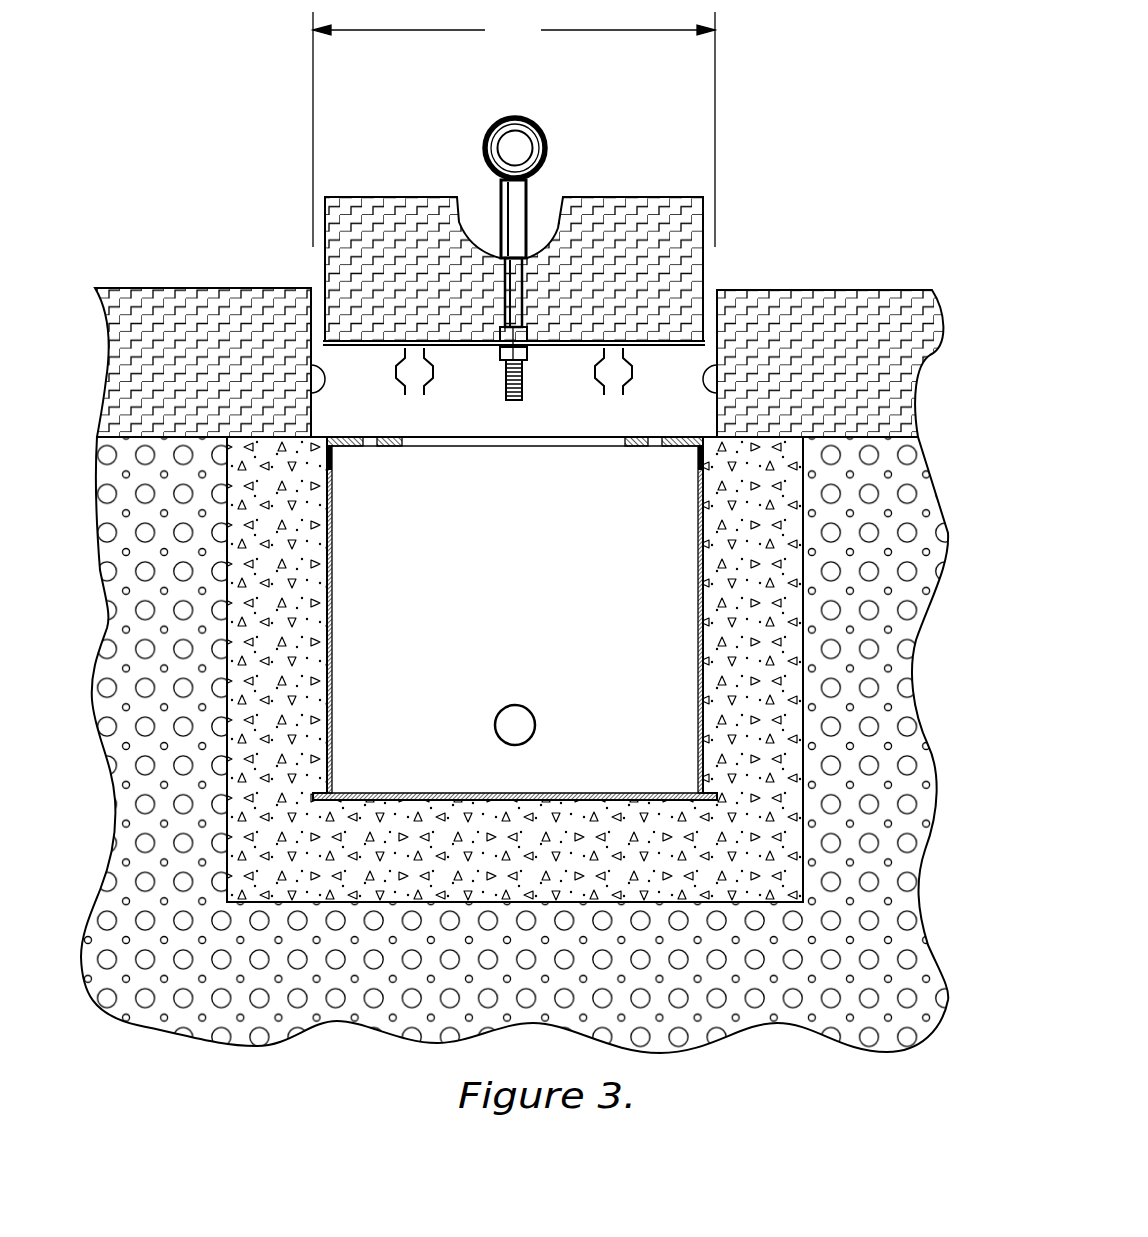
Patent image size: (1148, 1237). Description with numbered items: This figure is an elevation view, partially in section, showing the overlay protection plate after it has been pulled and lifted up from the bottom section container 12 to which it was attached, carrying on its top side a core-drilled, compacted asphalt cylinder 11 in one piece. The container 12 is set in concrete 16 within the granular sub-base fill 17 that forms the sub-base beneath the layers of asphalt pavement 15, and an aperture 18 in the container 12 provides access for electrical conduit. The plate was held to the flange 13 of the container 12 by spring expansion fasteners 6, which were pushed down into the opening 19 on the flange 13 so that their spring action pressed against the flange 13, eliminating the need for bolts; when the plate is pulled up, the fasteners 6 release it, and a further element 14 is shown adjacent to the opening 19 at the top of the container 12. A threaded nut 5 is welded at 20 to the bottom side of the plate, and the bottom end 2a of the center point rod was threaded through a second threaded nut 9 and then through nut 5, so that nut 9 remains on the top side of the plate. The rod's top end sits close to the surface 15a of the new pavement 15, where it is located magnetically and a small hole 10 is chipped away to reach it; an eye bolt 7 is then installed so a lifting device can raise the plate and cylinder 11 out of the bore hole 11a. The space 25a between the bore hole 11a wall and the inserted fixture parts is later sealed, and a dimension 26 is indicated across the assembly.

The bottom end of center point rod 2a is at (525, 398).
The threaded nut 5 is at (524, 375).
The spring expansion fasteners 6 is at (424, 390).
The eye bolt 7 is at (541, 133).
The threaded nut 9 is at (500, 333).
The small hole 10 is at (482, 197).
The core-drilled compacted asphalt cylinder 11 is at (514, 271).
The bore hole 11a is at (371, 393).
The bottom section container 12 is at (697, 623).
The flange 13 is at (349, 452).
The gasket plate 14 is at (373, 452).
The asphalt pavement 15 is at (519, 362).
The surface of new pavement 15a is at (180, 287).
The concrete 16 is at (515, 669).
The granular sub-base fill 17 is at (514, 745).
The aperture 18 is at (533, 710).
The opening 19 is at (447, 448).
The weld 20 is at (500, 353).
The space 25a is at (313, 391).
The cover width dimension 26 is at (514, 129).